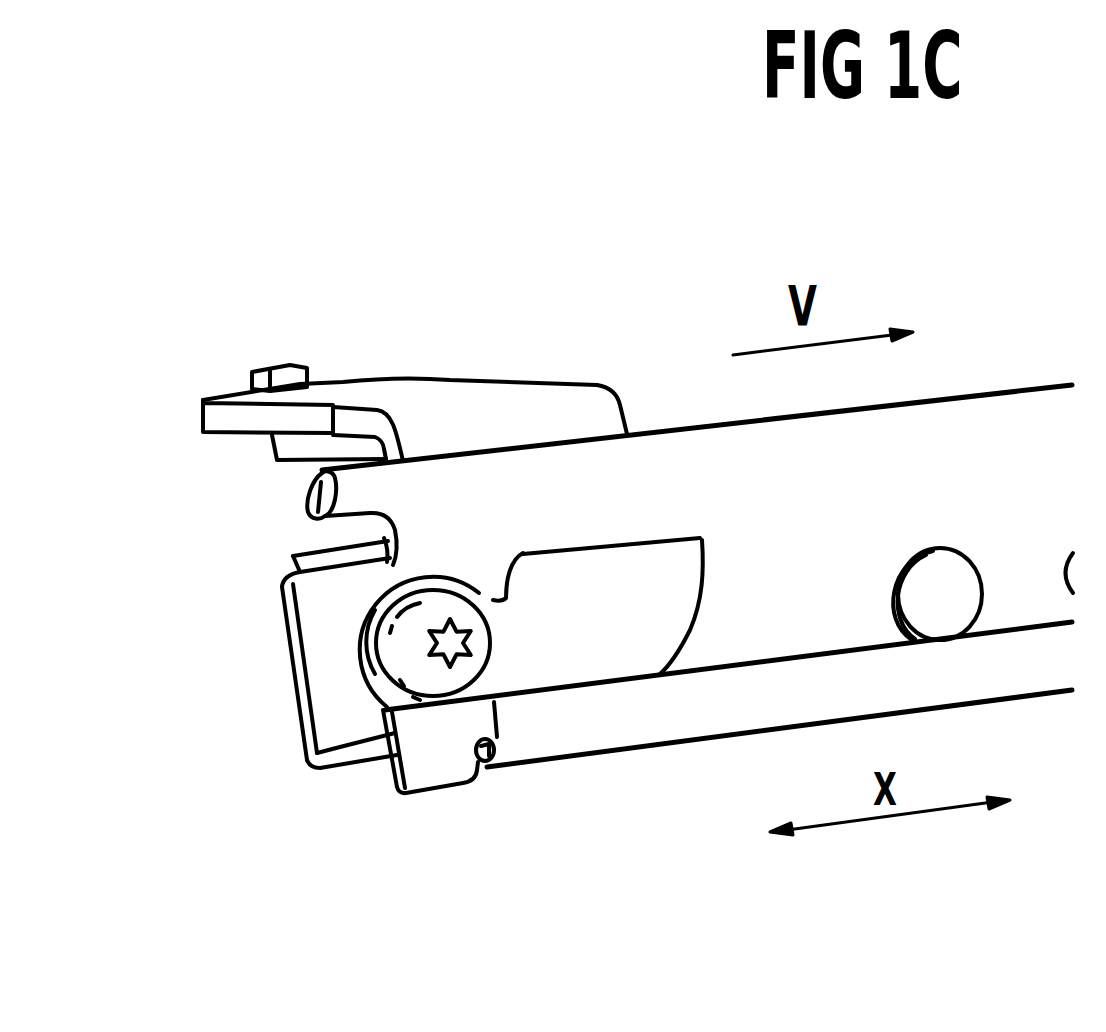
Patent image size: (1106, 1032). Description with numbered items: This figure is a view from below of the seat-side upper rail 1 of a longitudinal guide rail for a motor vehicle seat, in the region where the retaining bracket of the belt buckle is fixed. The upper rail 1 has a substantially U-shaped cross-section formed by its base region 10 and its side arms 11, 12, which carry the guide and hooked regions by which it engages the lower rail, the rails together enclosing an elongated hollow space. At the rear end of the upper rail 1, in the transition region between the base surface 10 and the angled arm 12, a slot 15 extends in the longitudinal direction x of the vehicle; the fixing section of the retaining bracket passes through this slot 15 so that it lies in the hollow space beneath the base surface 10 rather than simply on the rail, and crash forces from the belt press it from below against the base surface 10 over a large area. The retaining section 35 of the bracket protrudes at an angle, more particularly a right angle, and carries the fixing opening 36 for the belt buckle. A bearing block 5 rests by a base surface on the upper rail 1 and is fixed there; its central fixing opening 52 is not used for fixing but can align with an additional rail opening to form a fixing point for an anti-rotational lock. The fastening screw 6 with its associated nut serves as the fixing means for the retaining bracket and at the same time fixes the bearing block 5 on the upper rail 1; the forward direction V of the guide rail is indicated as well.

The upper rail 1 is at (963, 387).
The bearing block 5 is at (425, 347).
The fastening screw 6 is at (470, 660).
The base region 10 is at (312, 655).
The side arm 11 is at (330, 767).
The side arm 12 is at (287, 572).
The slot 15 is at (653, 547).
The retaining section 35 is at (398, 391).
The fixing opening 36 is at (335, 392).
The central fixing opening 52 is at (940, 573).